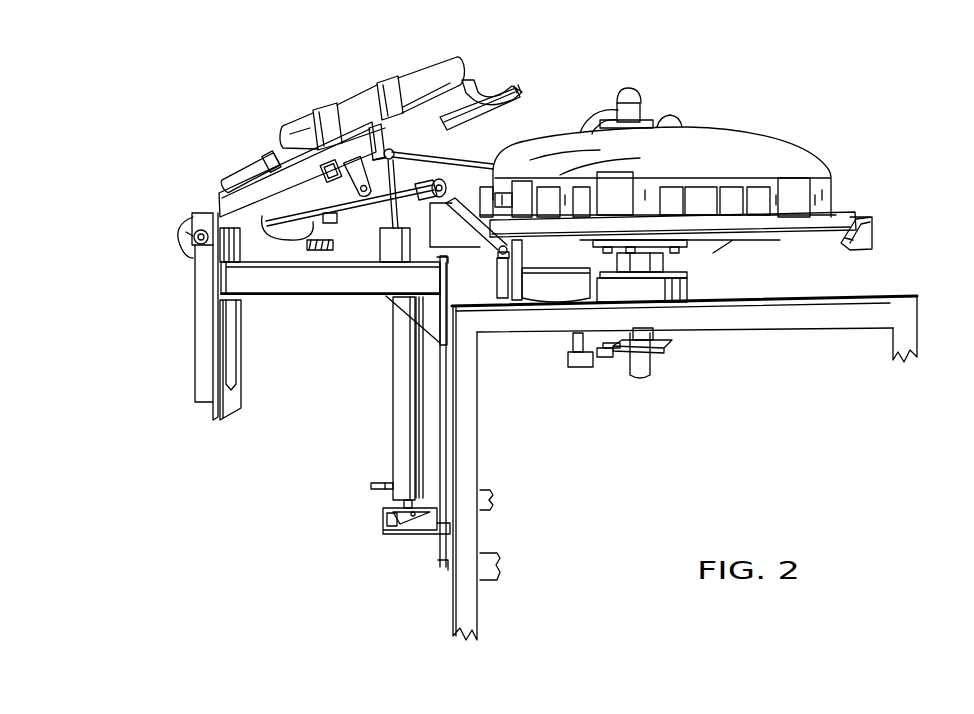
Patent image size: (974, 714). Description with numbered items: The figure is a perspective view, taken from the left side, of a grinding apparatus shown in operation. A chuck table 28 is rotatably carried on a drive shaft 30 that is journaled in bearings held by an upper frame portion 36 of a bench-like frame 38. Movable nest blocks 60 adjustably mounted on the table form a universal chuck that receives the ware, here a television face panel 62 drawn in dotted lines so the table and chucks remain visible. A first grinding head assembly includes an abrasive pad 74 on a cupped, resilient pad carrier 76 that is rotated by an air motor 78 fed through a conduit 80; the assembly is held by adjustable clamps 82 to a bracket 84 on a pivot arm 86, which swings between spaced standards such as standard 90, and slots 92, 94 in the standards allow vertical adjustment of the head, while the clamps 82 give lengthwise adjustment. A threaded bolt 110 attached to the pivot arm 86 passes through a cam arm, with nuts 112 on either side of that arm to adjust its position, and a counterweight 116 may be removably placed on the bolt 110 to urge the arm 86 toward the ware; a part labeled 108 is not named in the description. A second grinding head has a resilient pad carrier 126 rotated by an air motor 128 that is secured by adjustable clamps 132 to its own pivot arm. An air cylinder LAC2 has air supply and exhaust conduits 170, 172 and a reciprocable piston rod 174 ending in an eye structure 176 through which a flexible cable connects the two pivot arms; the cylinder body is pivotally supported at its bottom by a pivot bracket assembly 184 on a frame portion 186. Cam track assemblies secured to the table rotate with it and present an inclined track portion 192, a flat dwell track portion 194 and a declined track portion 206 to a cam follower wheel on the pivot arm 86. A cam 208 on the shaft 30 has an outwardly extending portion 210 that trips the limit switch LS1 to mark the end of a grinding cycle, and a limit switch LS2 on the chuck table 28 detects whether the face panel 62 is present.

The chuck table 28 is at (757, 223).
The drive shaft 30 is at (650, 375).
The upper frame portion 36 is at (889, 300).
The bench-like frame 38 is at (920, 343).
The movable nest blocks 60 is at (790, 203).
The television face panel 62 is at (727, 128).
The abrasive pad 74 is at (480, 113).
The resilient pad carrier 76 is at (507, 87).
The air motor 78 is at (297, 113).
The conduit 80 is at (222, 178).
The adjustable clamps 82 is at (322, 96).
The bracket 84 is at (383, 140).
The pivot arm 86 is at (180, 228).
The standard 90 is at (190, 214).
The slot 92 is at (240, 256).
The slot 94 is at (216, 308).
The arm 108 is at (247, 209).
The threaded cam arm support member or bolt 110 is at (312, 212).
The nuts 112 is at (294, 249).
The counterweight 116 is at (310, 253).
The resilient pad carrier 126 is at (660, 120).
The air motor 128 is at (597, 98).
The adjustable clamps 132 is at (573, 132).
The air supply and exhaust conduit 170 is at (390, 480).
The air supply and exhaust conduit 172 is at (378, 262).
The reciprocable piston rod 174 is at (400, 220).
The eye structure 176 is at (394, 158).
The pivot bracket assembly 184 is at (403, 523).
The frame portion 186 is at (417, 532).
The inclined track portion 192 is at (497, 258).
The flat or dwell track portion 194 is at (442, 187).
The declined track portion 206 is at (831, 248).
The cam 208 is at (672, 343).
The outwardly extending portion 210 is at (615, 354).
The limit switch LS1 is at (568, 358).
The limit switch LS2 is at (500, 193).
The air cylinder LAC2 is at (393, 375).